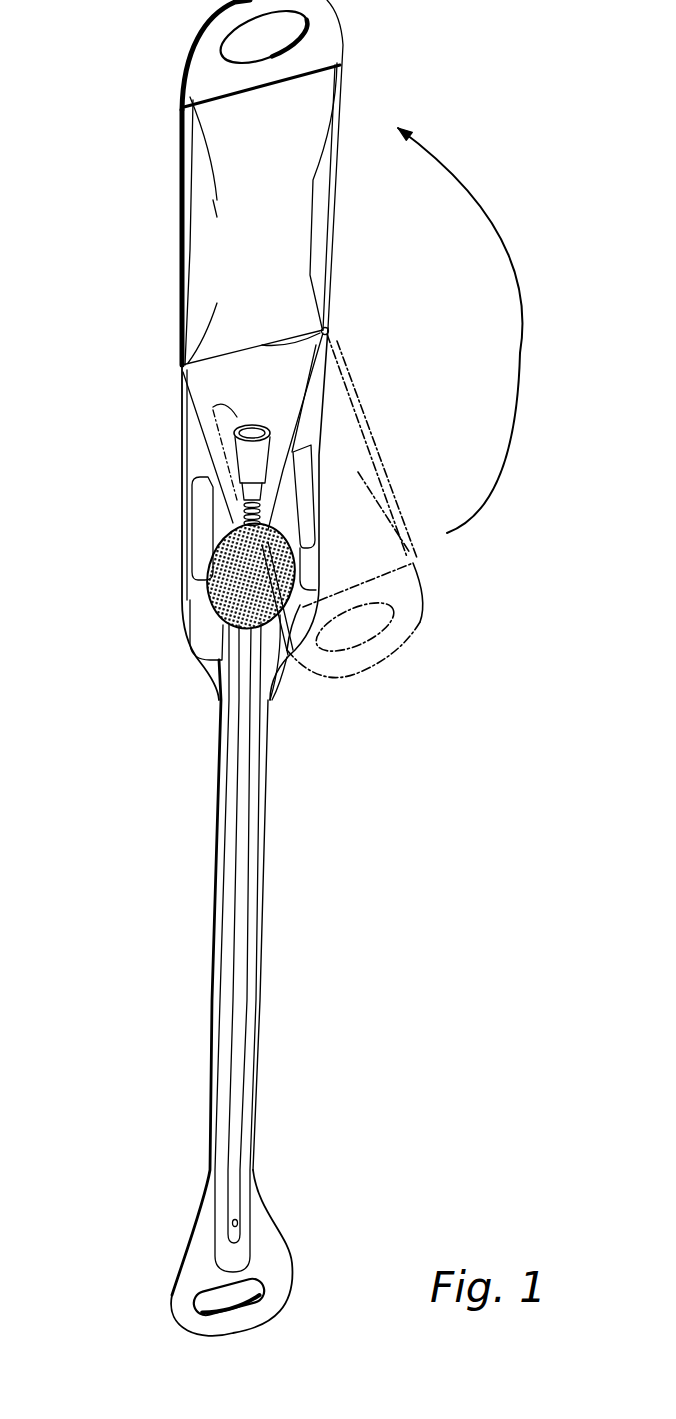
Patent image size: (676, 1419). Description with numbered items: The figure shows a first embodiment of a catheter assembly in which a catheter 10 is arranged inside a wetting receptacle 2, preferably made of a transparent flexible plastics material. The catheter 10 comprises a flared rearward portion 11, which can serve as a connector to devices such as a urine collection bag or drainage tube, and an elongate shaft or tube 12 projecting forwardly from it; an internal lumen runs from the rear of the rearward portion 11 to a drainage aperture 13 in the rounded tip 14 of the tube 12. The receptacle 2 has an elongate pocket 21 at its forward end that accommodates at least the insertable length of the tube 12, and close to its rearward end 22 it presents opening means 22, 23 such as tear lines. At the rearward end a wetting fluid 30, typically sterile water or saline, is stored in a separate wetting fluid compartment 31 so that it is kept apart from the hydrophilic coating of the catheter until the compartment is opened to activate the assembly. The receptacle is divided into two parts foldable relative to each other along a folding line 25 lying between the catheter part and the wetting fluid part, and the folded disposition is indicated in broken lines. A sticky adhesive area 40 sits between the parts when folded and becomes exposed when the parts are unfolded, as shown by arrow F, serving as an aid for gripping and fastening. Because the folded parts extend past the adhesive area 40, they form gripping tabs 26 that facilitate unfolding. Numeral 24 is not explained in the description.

The wetting receptacle 2 is at (208, 798).
The catheter 10 is at (252, 760).
The flared rearward portion 11 is at (254, 430).
The elongate shaft or tube 12 is at (238, 927).
The drainage aperture 13 is at (240, 1223).
The rounded tip 14 is at (215, 1250).
The elongate pocket 21 is at (217, 1032).
The rearward end / opening means 22 is at (180, 415).
The opening means 23 is at (187, 463).
The slot B 24 is at (187, 597).
The folding line 25 is at (327, 330).
The gripping tabs 26 is at (413, 620).
The wetting fluid 30 is at (293, 132).
The wetting fluid compartment 31 is at (183, 150).
The sticky adhesive area 40 is at (230, 622).
The arrow F is at (520, 360).